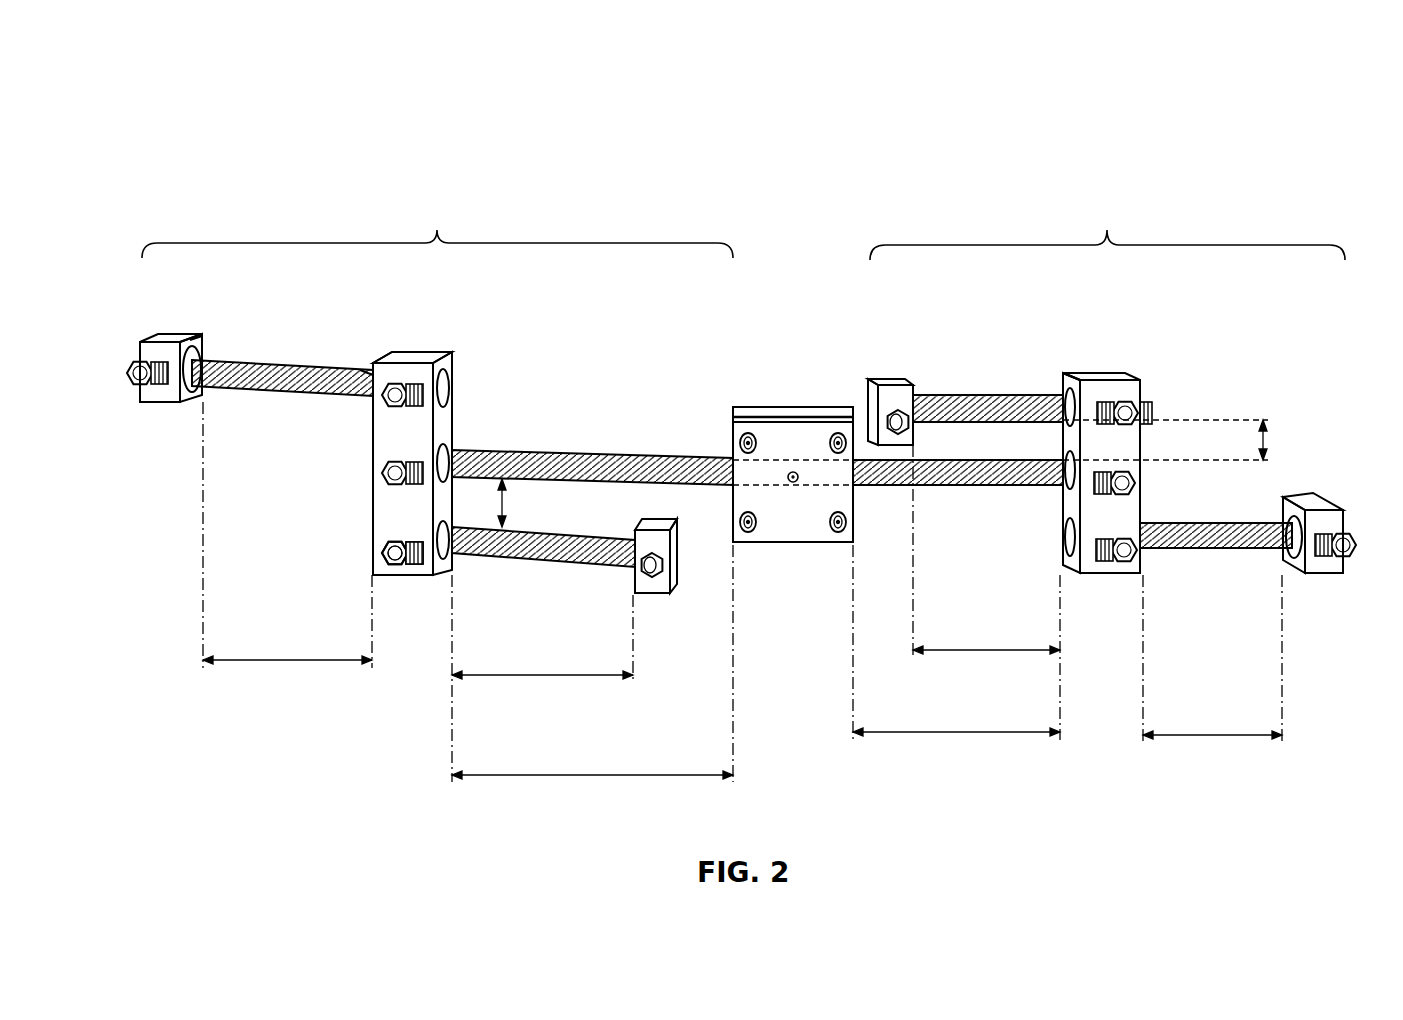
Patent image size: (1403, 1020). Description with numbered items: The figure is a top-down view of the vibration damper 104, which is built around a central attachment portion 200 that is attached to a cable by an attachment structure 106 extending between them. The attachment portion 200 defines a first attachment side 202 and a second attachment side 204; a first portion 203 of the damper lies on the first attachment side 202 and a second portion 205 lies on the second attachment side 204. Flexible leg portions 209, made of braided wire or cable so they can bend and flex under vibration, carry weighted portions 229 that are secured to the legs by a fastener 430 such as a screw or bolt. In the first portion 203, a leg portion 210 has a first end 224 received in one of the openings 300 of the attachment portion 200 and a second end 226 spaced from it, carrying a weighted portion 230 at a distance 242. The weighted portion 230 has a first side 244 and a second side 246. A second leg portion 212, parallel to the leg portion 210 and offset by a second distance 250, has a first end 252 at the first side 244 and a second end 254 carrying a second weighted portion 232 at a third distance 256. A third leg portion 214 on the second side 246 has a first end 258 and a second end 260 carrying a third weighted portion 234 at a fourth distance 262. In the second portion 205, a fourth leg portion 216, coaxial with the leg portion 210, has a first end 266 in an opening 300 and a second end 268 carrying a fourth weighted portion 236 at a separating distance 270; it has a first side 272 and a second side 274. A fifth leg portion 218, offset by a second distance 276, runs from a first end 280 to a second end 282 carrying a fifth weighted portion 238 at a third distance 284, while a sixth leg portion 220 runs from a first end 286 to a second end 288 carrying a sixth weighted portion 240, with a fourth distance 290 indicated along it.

The vibration damper 104 is at (228, 97).
The attachment structure 106 is at (791, 470).
The attachment portion 200 is at (803, 430).
The first attachment side 202 is at (896, 210).
The first portion 203 is at (1107, 221).
The second attachment side 204 is at (598, 210).
The second portion 205 is at (437, 220).
The leg portions 209 is at (749, 618).
The leg portion 210 is at (968, 486).
The second leg portion 212 is at (987, 393).
The third leg portion 214 is at (1202, 542).
The fourth leg portion 216 is at (545, 458).
The fifth leg portion 218 is at (562, 568).
The sixth leg portion 220 is at (273, 386).
The first end 224 is at (855, 490).
The second end 226 is at (1063, 487).
The weighted portions 229 is at (1203, 310).
The weighted portion 230 is at (1110, 375).
The second weighted portion 232 is at (895, 377).
The third weighted portion 234 is at (1317, 503).
The fourth weighted portion 236 is at (415, 352).
The fifth weighted portion 238 is at (668, 596).
The sixth weighted portion 240 is at (158, 403).
The distance 242 is at (957, 735).
The first side 244 is at (1075, 375).
The second side 246 is at (1143, 457).
The second distance 250 is at (1266, 440).
The first end 252 is at (1057, 393).
The second end 254 is at (913, 393).
The third distance 256 is at (987, 653).
The first end 258 is at (1143, 523).
The second end 260 is at (1283, 552).
The fourth distance 262 is at (1212, 738).
The first end 266 is at (730, 458).
The second end 268 is at (460, 458).
The separating distance 270 is at (592, 778).
The first side 272 is at (455, 362).
The second side 274 is at (385, 352).
The second distance 276 is at (506, 507).
The first end 280 is at (452, 555).
The second end 282 is at (630, 566).
The third distance 284 is at (542, 678).
The first end 286 is at (368, 396).
The second end 288 is at (206, 345).
The fourth distance 290 is at (288, 663).
The openings 300 is at (780, 488).
The fastener 430 is at (387, 560).